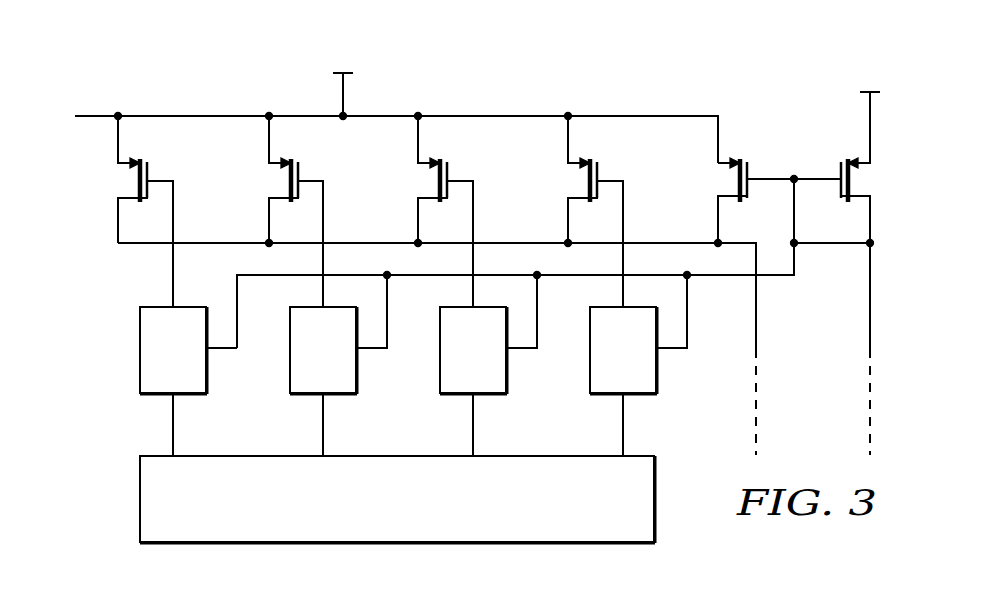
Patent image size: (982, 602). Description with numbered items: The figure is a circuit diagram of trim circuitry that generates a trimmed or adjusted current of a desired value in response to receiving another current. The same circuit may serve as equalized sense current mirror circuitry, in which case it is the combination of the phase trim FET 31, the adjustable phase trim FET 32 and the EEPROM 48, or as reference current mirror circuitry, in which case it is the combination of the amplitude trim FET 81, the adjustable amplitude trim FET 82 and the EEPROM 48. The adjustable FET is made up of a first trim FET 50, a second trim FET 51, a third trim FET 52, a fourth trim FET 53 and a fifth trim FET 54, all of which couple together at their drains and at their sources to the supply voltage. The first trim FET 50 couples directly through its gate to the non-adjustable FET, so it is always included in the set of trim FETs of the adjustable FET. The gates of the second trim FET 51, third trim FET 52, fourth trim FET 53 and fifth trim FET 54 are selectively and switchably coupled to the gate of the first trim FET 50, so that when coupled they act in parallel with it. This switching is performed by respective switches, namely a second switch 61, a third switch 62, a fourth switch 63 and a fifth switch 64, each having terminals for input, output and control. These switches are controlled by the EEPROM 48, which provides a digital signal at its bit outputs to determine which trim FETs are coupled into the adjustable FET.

The adjustable phase trim FET 32 is at (493, 302).
The adjustable amplitude trim FET 82 is at (100, 68).
The fifth trim FET 54 is at (149, 168).
The fourth trim FET 53 is at (299, 168).
The third trim FET 52 is at (449, 168).
The second trim FET 51 is at (599, 168).
The first trim FET 50 is at (749, 169).
The phase trim FET 31 is at (860, 154).
The amplitude trim FET 81 is at (831, 170).
The fifth switch 64 is at (150, 394).
The fourth switch 63 is at (300, 394).
The third switch 62 is at (450, 394).
The second switch 61 is at (600, 394).
The EEPROM 48 is at (181, 543).